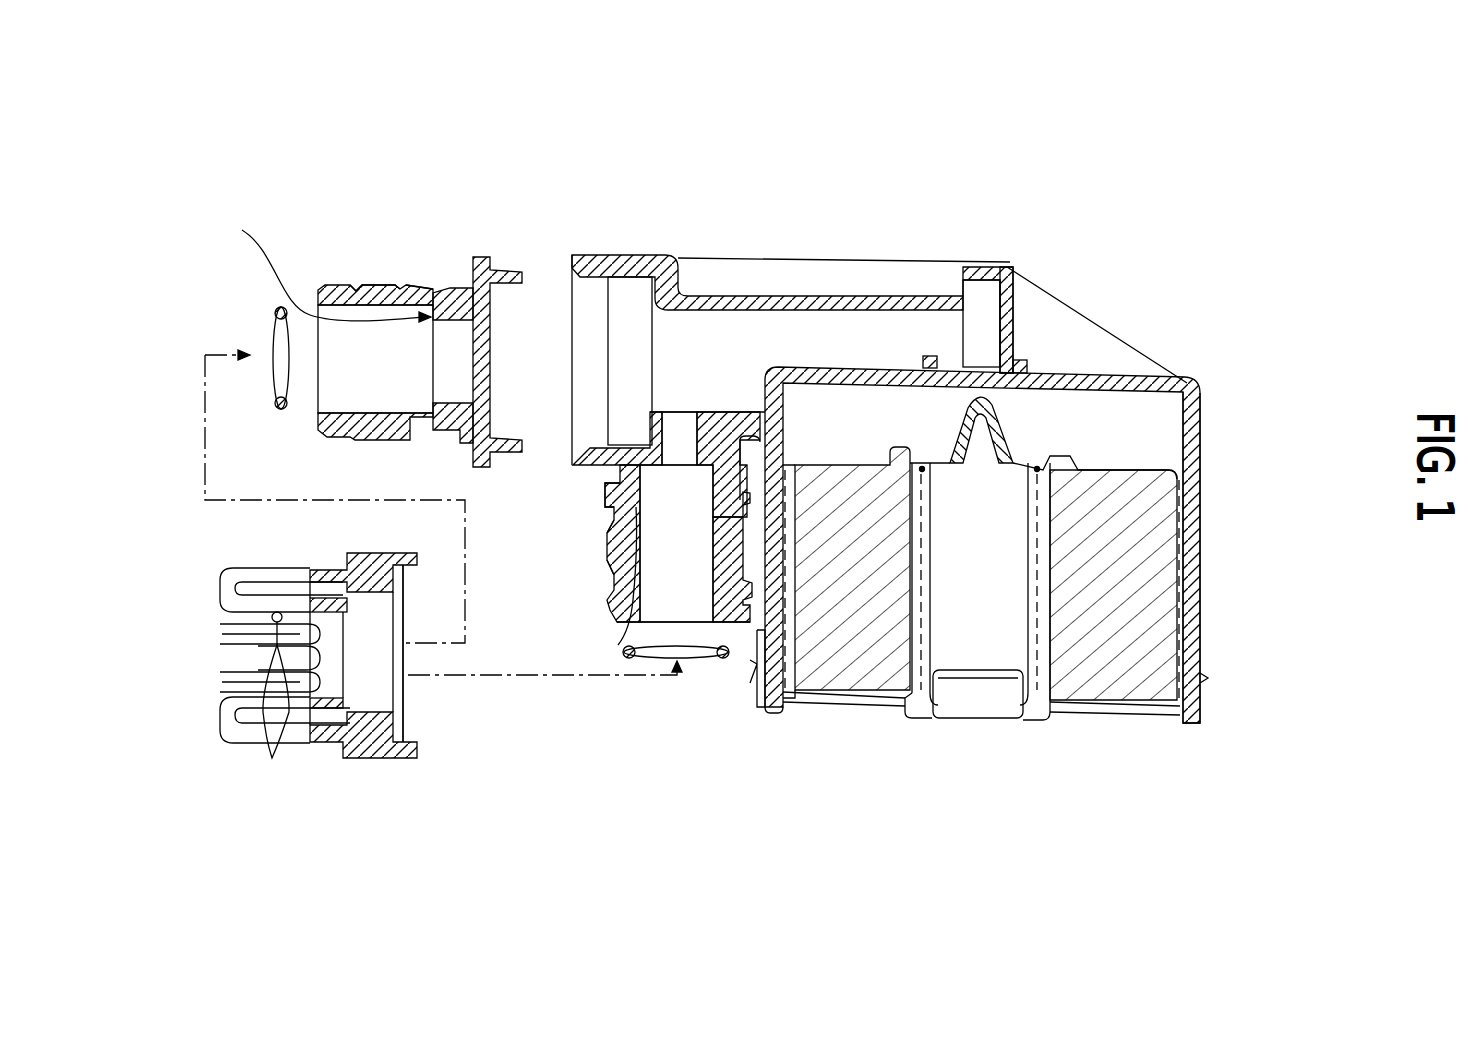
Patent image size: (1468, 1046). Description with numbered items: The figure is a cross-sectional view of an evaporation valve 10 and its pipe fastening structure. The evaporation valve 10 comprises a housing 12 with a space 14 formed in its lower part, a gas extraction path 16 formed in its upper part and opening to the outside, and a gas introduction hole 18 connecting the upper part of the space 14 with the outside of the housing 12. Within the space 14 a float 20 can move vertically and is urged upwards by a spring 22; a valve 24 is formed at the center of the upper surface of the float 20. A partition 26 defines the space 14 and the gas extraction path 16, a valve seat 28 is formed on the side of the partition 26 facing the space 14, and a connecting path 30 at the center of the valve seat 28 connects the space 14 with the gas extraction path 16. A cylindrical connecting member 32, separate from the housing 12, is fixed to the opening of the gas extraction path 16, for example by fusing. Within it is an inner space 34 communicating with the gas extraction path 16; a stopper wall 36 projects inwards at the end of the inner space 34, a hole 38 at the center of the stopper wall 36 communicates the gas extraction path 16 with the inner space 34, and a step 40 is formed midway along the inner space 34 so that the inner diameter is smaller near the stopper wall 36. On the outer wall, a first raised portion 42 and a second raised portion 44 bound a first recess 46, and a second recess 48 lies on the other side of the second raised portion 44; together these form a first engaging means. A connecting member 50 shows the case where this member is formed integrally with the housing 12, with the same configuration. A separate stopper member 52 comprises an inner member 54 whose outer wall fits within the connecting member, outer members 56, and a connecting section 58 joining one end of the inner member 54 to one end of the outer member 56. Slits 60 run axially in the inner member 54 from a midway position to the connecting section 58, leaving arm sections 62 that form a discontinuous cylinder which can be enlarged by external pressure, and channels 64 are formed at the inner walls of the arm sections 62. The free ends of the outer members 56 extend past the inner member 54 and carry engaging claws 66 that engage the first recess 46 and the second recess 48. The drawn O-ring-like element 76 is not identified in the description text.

The evaporation valve 10 is at (1133, 323).
The housing 12 is at (1133, 377).
The space 14 is at (1138, 452).
The gas extraction path 16 is at (828, 418).
The gas introduction hole 18 is at (1193, 420).
The float 20 is at (1130, 607).
The spring 22 is at (1037, 632).
The valve 24 is at (1005, 398).
The partition 26 is at (875, 372).
The valve seat 28 is at (986, 405).
The connecting path 30 is at (1013, 312).
The cylindrical connecting member 32 is at (488, 442).
The inner space 34 is at (400, 378).
The stopper wall 36 is at (478, 388).
The hole 38 is at (480, 357).
The step 40 is at (417, 436).
The first raised portion 42 is at (340, 288).
The second raised portion 44 is at (398, 287).
The first recess 46 is at (358, 287).
The second recess 48 is at (424, 290).
The connecting member 50 is at (737, 632).
The stopper member 52 is at (297, 651).
The inner member 54 is at (310, 596).
The outer member 56 is at (325, 570).
The connecting section 58 is at (230, 588).
The slit 60 is at (242, 658).
The arm section 62 is at (232, 632).
The channel 64 is at (272, 740).
The engaging claw 66 is at (343, 572).
The O-ring seal 76 is at (280, 307).